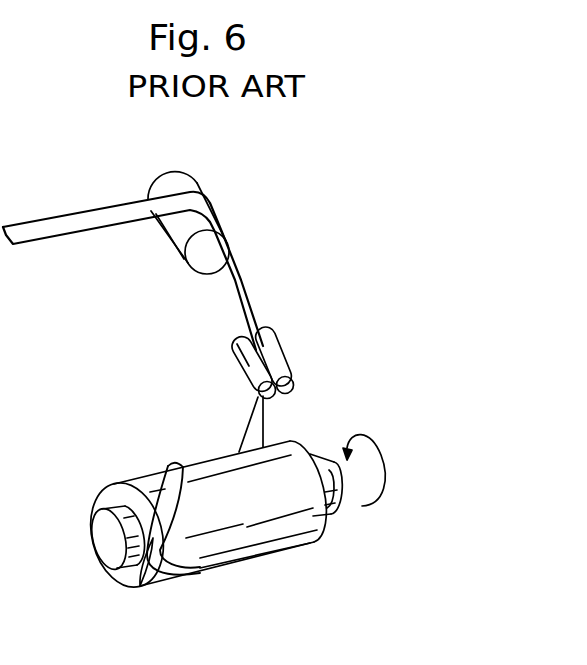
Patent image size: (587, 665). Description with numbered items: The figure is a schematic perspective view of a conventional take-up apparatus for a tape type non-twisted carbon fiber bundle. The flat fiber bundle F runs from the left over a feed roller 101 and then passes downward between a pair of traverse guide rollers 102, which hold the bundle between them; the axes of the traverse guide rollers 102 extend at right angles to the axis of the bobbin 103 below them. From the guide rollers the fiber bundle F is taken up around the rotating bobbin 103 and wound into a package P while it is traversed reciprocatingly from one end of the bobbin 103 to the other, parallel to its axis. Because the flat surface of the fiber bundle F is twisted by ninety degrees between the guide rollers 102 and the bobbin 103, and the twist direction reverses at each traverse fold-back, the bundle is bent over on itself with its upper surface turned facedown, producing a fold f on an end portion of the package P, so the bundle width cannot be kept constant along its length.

The tape type carbon fiber bundle F is at (90, 215).
The feed roller 101 is at (182, 237).
The traverse guide rollers 102 is at (282, 370).
The bobbin 103 is at (103, 533).
The package P is at (203, 460).
The fold f is at (140, 588).